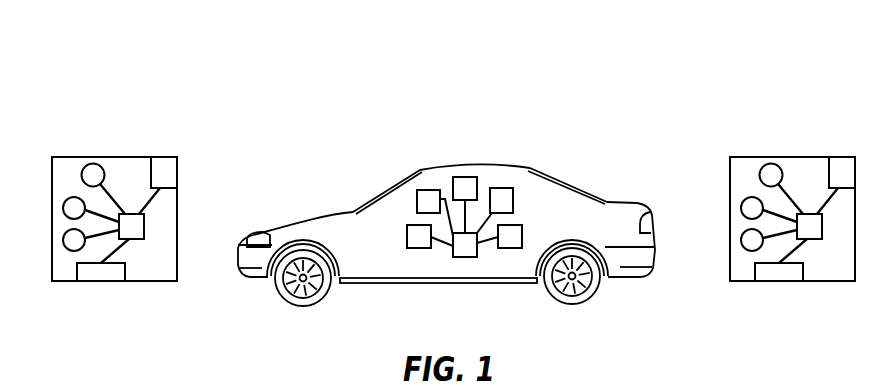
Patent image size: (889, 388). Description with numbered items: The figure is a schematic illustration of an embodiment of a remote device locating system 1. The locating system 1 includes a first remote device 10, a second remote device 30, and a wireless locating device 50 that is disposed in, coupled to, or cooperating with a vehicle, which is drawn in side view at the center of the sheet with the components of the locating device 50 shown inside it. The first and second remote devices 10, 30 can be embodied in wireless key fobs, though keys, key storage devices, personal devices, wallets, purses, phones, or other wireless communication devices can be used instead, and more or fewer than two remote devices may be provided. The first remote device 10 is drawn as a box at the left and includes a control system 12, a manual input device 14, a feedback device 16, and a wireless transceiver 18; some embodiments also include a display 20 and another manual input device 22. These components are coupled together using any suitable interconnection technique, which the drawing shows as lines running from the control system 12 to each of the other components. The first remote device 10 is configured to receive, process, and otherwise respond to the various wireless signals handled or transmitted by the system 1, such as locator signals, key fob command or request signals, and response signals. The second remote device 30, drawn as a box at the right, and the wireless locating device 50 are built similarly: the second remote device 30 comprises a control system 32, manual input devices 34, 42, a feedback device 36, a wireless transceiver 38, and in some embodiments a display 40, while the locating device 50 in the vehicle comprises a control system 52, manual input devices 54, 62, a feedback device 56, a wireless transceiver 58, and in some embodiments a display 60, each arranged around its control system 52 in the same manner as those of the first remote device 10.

The remote device locating system 1 is at (408, 134).
The wireless locating device 50 is at (313, 41).
The first remote device 10 is at (126, 119).
The control system 12 is at (135, 241).
The manual input device 14 is at (64, 207).
The feedback device 16 is at (92, 163).
The wireless transceiver 18 is at (162, 157).
The display 20 is at (92, 283).
The manual input device 22 is at (64, 240).
The second remote device 30 is at (804, 119).
The control system 32 is at (813, 241).
The manual input device 34 is at (742, 207).
The feedback device 36 is at (770, 163).
The wireless transceiver 38 is at (840, 157).
The display 40 is at (770, 283).
The manual input device 42 is at (742, 240).
The control system 52 is at (460, 258).
The manual input device 54 is at (502, 188).
The feedback device 56 is at (417, 193).
The wireless transceiver 58 is at (465, 177).
The display 60 is at (508, 249).
The manual input device 62 is at (407, 237).